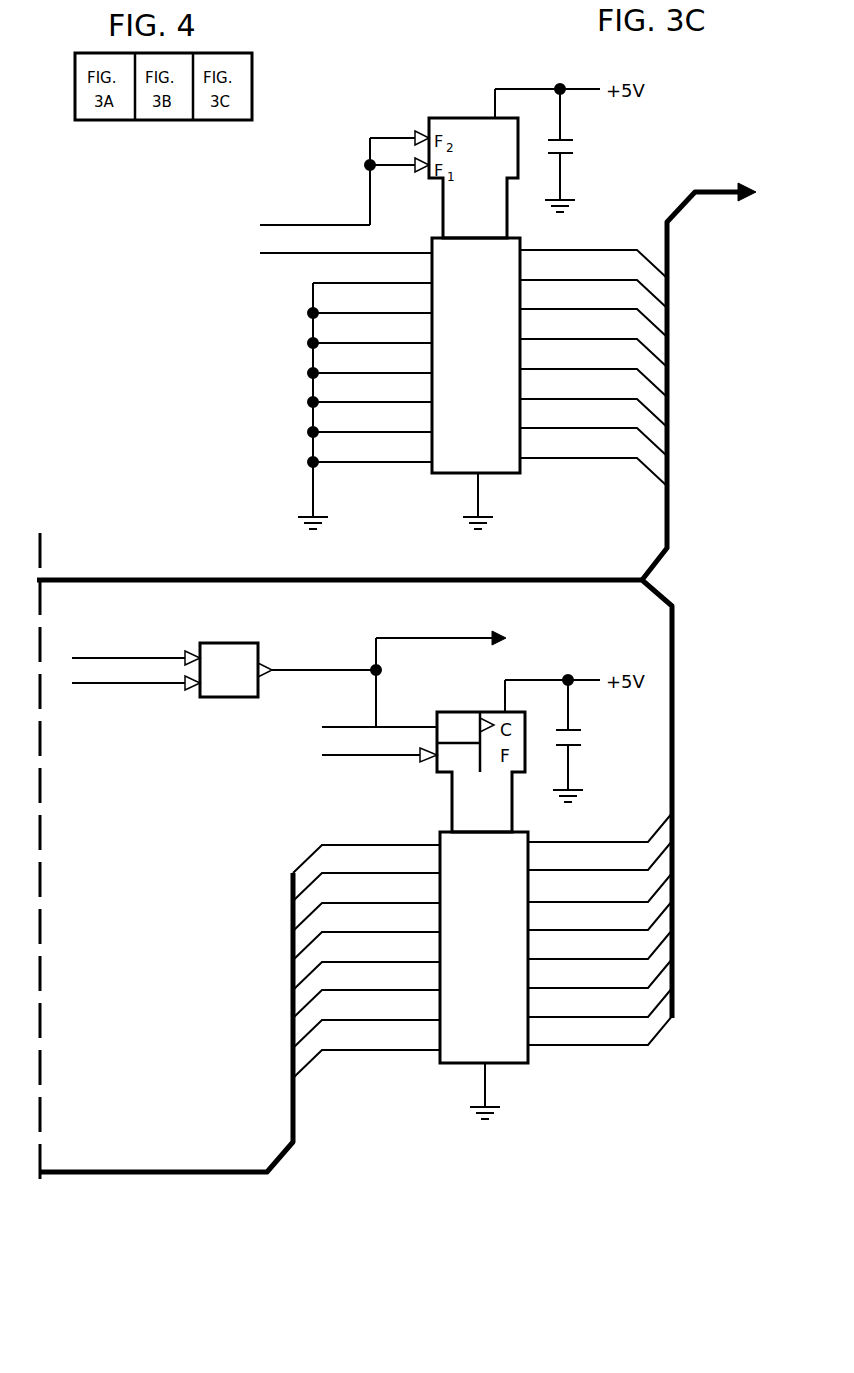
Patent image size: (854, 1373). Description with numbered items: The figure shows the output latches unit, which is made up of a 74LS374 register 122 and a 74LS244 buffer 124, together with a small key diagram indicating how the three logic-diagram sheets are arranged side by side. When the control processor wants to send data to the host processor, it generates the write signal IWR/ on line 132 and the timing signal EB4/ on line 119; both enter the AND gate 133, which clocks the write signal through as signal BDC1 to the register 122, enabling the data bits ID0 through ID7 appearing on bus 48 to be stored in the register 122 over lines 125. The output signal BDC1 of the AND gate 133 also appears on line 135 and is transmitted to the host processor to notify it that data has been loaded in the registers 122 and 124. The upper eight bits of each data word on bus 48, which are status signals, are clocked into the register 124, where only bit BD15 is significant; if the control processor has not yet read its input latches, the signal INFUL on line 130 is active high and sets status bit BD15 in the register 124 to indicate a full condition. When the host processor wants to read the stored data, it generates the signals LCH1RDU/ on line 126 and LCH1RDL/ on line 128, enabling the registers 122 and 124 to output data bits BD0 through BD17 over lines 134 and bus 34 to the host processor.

The bus 34 is at (672, 247).
The bus 48 is at (178, 1170).
The line 119 is at (88, 660).
The 74LS374 register 122 is at (520, 1065).
The 74LS244 buffer 124 is at (520, 478).
The lines 125 is at (400, 1053).
The line 126 is at (260, 227).
The line 128 is at (362, 758).
The line 130 is at (262, 256).
The line 132 is at (100, 686).
The AND gate 133 is at (228, 697).
The lines 134 is at (636, 460).
The line 135 is at (405, 640).